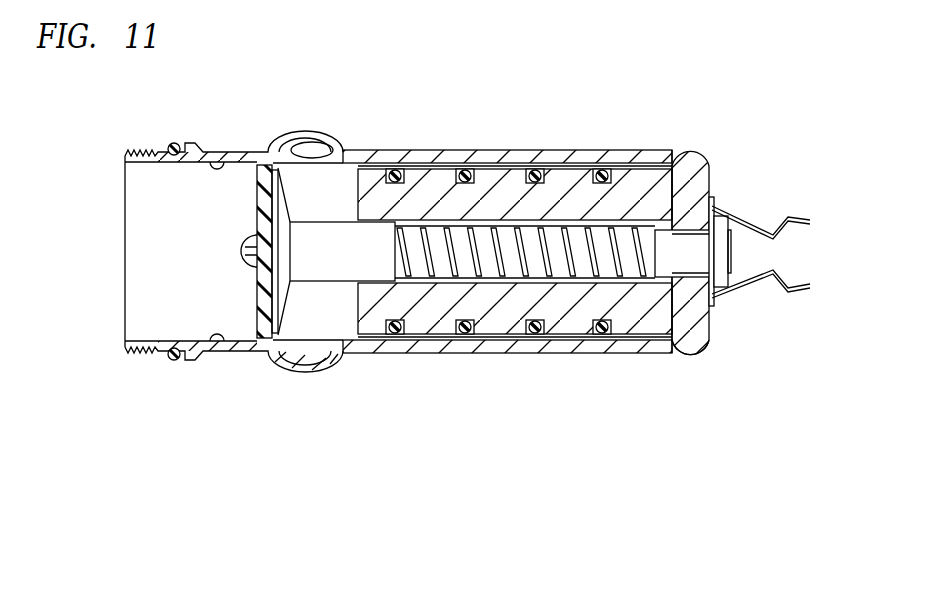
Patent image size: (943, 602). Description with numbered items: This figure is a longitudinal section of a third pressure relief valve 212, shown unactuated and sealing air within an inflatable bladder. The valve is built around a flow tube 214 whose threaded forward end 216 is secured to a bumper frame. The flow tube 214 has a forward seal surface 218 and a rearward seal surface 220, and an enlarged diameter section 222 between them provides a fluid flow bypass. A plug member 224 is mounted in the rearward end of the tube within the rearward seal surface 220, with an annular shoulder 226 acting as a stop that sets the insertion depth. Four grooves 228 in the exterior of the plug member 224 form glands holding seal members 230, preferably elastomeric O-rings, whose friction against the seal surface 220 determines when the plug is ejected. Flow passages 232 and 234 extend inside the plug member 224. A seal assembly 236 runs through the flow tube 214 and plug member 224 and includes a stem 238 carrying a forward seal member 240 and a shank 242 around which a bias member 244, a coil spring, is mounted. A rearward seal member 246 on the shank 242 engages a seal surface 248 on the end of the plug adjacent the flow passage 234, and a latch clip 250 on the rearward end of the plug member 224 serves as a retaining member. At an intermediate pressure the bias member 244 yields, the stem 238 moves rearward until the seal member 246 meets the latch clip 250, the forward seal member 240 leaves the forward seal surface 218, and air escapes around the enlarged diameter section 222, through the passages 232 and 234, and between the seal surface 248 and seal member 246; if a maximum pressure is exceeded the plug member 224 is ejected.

The pressure relief valve 212 is at (143, 132).
The flow tube 214 is at (370, 341).
The threaded forward end 216 is at (138, 321).
The forward seal surface 218 is at (240, 157).
The rearward seal surface 220 is at (568, 162).
The enlarged diameter section 222 is at (334, 153).
The plug member 224 is at (687, 183).
The annular shoulder 226 is at (695, 348).
The grooves 228 is at (467, 336).
The seal members 230 is at (535, 336).
The flow passage 232 is at (442, 226).
The flow passage 234 is at (677, 230).
The seal assembly 236 is at (312, 292).
The stem 238 is at (332, 237).
The seal member 240 is at (262, 341).
The shank 242 is at (628, 240).
The bias member 244 is at (580, 287).
The rearward seal member 246 is at (727, 252).
The seal surface 248 is at (758, 283).
The latch clip 250 is at (765, 227).